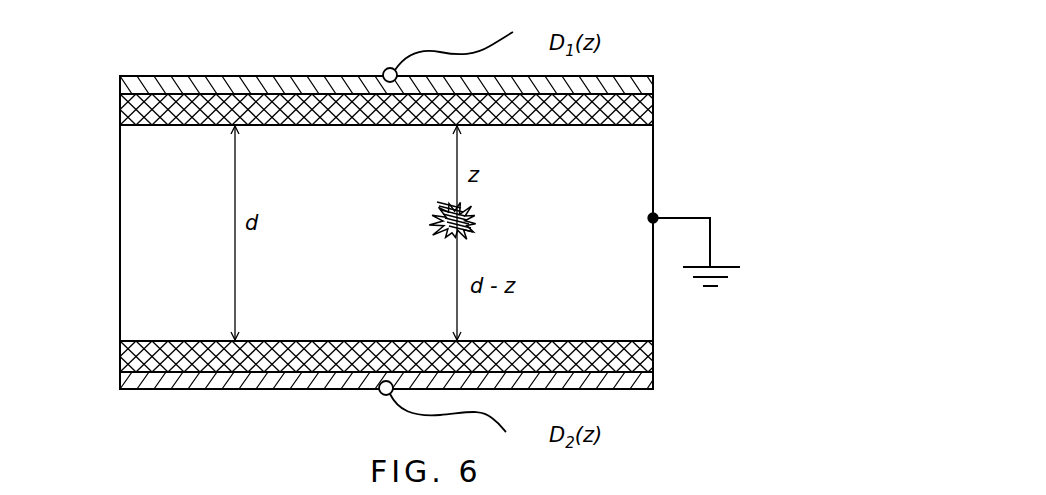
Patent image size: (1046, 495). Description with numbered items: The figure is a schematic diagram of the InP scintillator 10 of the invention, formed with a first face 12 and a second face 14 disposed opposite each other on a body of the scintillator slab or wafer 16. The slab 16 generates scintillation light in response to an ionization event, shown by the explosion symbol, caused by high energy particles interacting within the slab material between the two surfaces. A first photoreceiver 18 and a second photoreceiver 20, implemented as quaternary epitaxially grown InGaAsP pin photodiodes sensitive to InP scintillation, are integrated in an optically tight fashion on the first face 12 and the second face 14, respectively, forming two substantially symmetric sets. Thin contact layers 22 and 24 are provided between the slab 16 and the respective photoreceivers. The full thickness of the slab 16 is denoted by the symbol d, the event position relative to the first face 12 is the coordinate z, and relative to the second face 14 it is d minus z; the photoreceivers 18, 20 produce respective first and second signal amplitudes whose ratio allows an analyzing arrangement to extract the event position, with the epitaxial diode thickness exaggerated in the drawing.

The InP scintillator 10 is at (676, 99).
The first face 12 is at (140, 127).
The second face 14 is at (138, 341).
The scintillator slab 16 is at (610, 178).
The first photoreceiver 18 is at (197, 76).
The second photoreceiver 20 is at (203, 389).
The first contact layer 22 is at (122, 110).
The second contact layer 24 is at (653, 352).